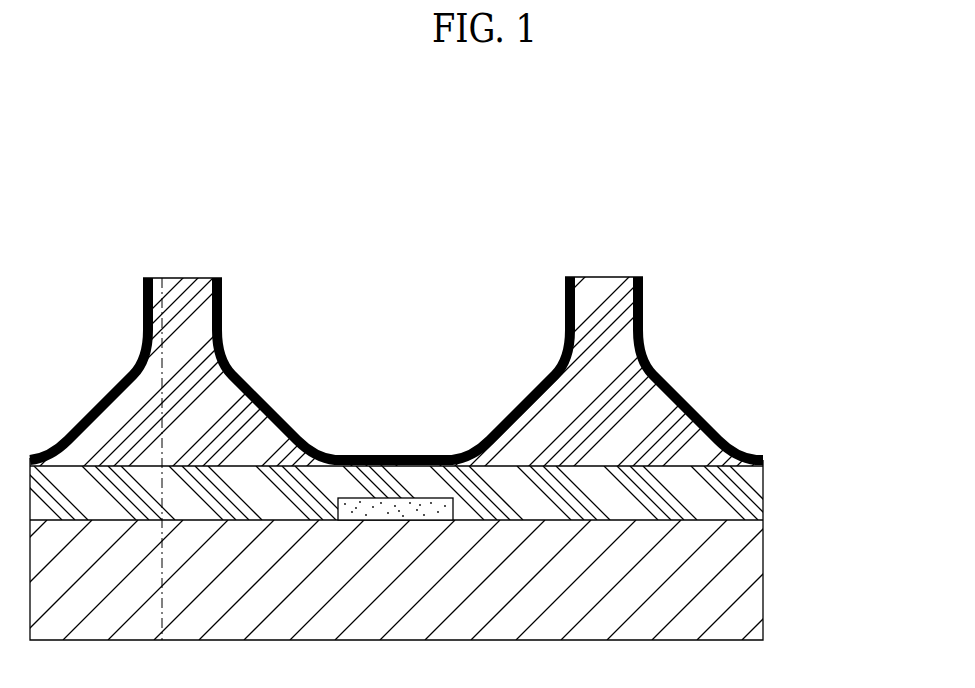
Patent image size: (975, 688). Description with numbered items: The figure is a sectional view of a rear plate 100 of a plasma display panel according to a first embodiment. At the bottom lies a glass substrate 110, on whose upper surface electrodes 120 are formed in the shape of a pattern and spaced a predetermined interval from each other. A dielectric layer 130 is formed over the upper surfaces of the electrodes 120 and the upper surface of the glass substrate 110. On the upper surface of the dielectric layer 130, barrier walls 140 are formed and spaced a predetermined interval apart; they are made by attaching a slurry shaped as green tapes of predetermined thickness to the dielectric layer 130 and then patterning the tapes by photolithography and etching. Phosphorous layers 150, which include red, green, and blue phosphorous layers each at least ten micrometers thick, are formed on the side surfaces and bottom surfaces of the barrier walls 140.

The rear plate 100 is at (857, 277).
The glass substrate 110 is at (748, 588).
The electrodes 120 is at (433, 508).
The dielectric layer 130 is at (745, 474).
The barrier walls 140 is at (623, 382).
The phosphorous layers 150 is at (643, 298).